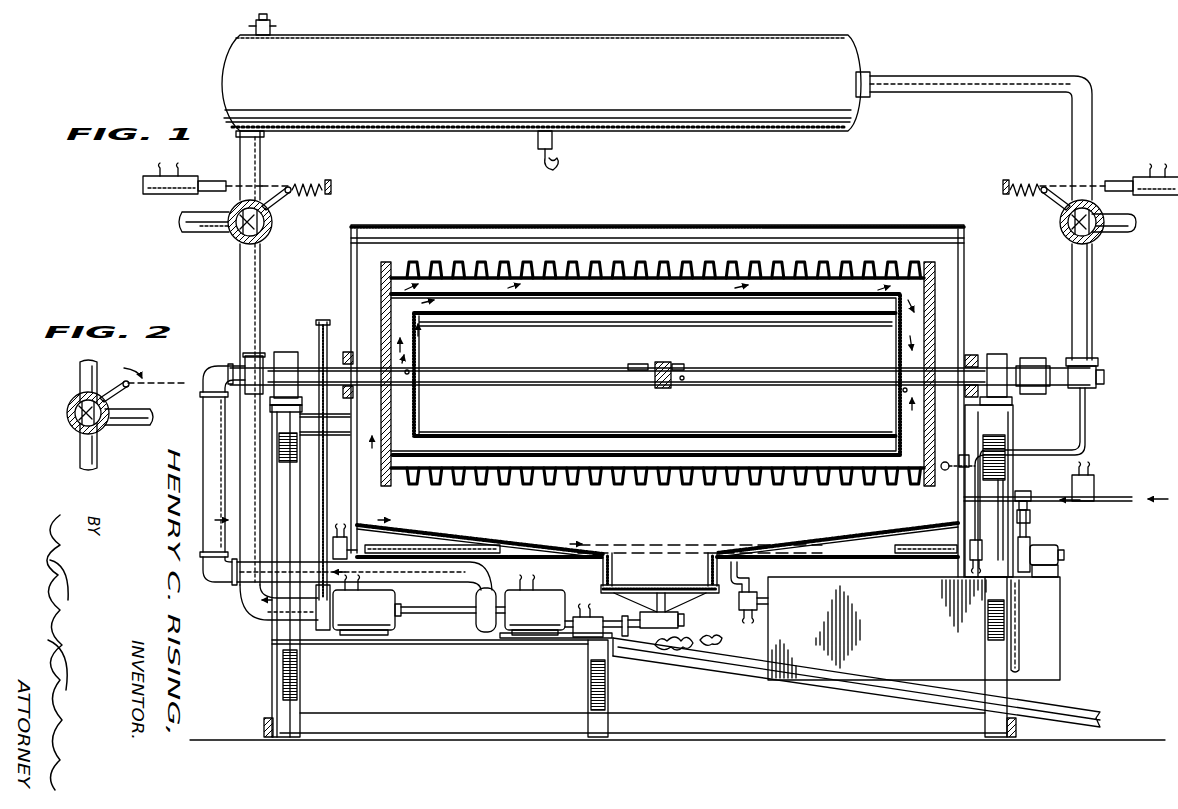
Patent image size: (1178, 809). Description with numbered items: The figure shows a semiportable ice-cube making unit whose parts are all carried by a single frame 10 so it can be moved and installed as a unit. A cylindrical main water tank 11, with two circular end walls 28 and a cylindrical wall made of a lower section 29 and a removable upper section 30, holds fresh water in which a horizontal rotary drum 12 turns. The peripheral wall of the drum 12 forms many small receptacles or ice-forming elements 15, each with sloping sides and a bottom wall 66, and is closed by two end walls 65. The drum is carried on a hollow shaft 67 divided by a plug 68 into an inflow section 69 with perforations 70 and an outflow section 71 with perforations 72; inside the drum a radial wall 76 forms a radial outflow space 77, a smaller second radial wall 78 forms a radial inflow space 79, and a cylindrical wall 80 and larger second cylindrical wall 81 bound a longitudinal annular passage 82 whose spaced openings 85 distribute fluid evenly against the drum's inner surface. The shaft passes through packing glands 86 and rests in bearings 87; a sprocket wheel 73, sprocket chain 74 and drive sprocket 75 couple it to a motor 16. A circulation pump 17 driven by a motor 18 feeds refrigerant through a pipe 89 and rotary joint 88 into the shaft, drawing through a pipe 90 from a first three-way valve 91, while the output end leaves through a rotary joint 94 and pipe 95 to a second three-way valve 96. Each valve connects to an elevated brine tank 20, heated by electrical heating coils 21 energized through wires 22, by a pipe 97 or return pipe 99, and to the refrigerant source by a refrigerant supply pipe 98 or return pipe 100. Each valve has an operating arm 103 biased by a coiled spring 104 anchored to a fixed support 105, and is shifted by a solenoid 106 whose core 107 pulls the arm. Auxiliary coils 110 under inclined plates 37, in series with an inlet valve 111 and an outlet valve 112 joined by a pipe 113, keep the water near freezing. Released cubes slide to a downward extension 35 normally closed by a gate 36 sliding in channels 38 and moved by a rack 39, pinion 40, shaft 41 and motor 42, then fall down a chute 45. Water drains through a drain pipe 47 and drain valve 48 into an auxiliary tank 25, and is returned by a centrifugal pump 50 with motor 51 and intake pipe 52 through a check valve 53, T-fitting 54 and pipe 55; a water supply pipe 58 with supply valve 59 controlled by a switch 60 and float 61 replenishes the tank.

In FIG. 1, the frame 10 is at (276, 676).
In FIG. 1, the main water tank 11 is at (864, 224).
In FIG. 1, the rotary drum 12 is at (942, 283).
In FIG. 1, the ice-forming elements 15 is at (672, 264).
In FIG. 1, the motor 16 is at (404, 605).
In FIG. 1, the circulation pump 17 is at (484, 630).
In FIG. 1, the motor 18 is at (532, 622).
In FIG. 1, the brine tank 20 is at (546, 72).
In FIG. 1, the electrical heating coils 21 is at (472, 122).
In FIG. 1, the wires 22 is at (556, 170).
In FIG. 1, the auxiliary tank 25 is at (914, 628).
In FIG. 1, the end walls 28 is at (351, 300).
In FIG. 1, the lower section 29 is at (826, 566).
In FIG. 1, the upper section 30 is at (522, 224).
In FIG. 1, the downward extension 35 is at (603, 568).
In FIG. 1, the gate 36 is at (690, 602).
In FIG. 1, the plates 37 is at (460, 538).
In FIG. 1, the channels 38 is at (601, 588).
In FIG. 1, the rack 39 is at (622, 618).
In FIG. 1, the pinion 40 is at (614, 646).
In FIG. 1, the shaft 41 is at (590, 640).
In FIG. 1, the motor 42 is at (580, 628).
In FIG. 1, the chute 45 is at (748, 676).
In FIG. 1, the drain pipe 47 is at (740, 574).
In FIG. 1, the drain valve 48 is at (750, 612).
In FIG. 1, the centrifugal pump 50 is at (1030, 540).
In FIG. 1, the motor 51 is at (1064, 554).
In FIG. 1, the intake pipe 52 is at (1010, 640).
In FIG. 1, the check valve 53 is at (1030, 515).
In FIG. 1, the T-fitting 54 is at (1024, 491).
In FIG. 1, the pipe 55 is at (1000, 490).
In FIG. 1, the water supply pipe 58 is at (1128, 496).
In FIG. 1, the supply valve 59 is at (1083, 501).
In FIG. 1, the switch 60 is at (984, 452).
In FIG. 1, the float 61 is at (946, 470).
In FIG. 1, the end walls 65 is at (380, 290).
In FIG. 1, the bottom wall 66 is at (806, 465).
In FIG. 1, the shaft 67 is at (528, 362).
In FIG. 1, the plug 68 is at (664, 362).
In FIG. 1, the inflow section 69 is at (636, 366).
In FIG. 1, the perforations 70 is at (410, 372).
In FIG. 1, the outflow section 71 is at (684, 376).
In FIG. 1, the perforations 72 is at (903, 391).
In FIG. 1, the sprocket wheel 73 is at (325, 322).
In FIG. 1, the sprocket chain 74 is at (326, 470).
In FIG. 1, the drive sprocket 75 is at (322, 634).
In FIG. 1, the radial wall 76 is at (900, 344).
In FIG. 1, the radial outflow space 77 is at (928, 305).
In FIG. 1, the second radial wall 78 is at (420, 344).
In FIG. 1, the radial inflow space 79 is at (420, 324).
In FIG. 1, the cylindrical wall 80 is at (806, 316).
In FIG. 1, the second cylindrical wall 81 is at (846, 290).
In FIG. 1, the longitudinal annular passage 82 is at (842, 305).
In FIG. 1, the spaced openings 85 is at (560, 300).
In FIG. 1, the packing glands 86 is at (348, 356).
In FIG. 1, the bearings 87 is at (284, 352).
In FIG. 1, the rotary joint 88 is at (250, 364).
In FIG. 1, the pipe 89 is at (210, 448).
In FIG. 1, the pipe 90 is at (252, 598).
In FIG. 1, the 3-way valve 91 is at (228, 246).
In FIG. 2, the 3-way valve 91 is at (72, 442).
In FIG. 1, the rotary joint 94 is at (1036, 358).
In FIG. 1, the pipe 95 is at (1092, 331).
In FIG. 1, the 3-way valve 96 is at (1062, 235).
In FIG. 2, the 3-way valve 96 is at (70, 426).
In FIG. 1, the pipe 97 is at (260, 165).
In FIG. 1, the refrigerant supply pipe 98 is at (195, 230).
In FIG. 1, the return pipe 99 is at (1092, 96).
In FIG. 1, the return pipe 100 is at (1122, 234).
In FIG. 1, the operating arm 103 is at (281, 200).
In FIG. 2, the operating arm 103 is at (128, 392).
In FIG. 1, the coiled spring 104 is at (312, 182).
In FIG. 1, the fixed support 105 is at (333, 186).
In FIG. 1, the solenoid 106 is at (190, 176).
In FIG. 1, the core 107 is at (211, 185).
In FIG. 1, the auxiliary coils 110 is at (420, 545).
In FIG. 1, the inlet valve 111 is at (333, 550).
In FIG. 1, the outlet valve 112 is at (984, 562).
In FIG. 1, the pipe 113 is at (1088, 415).